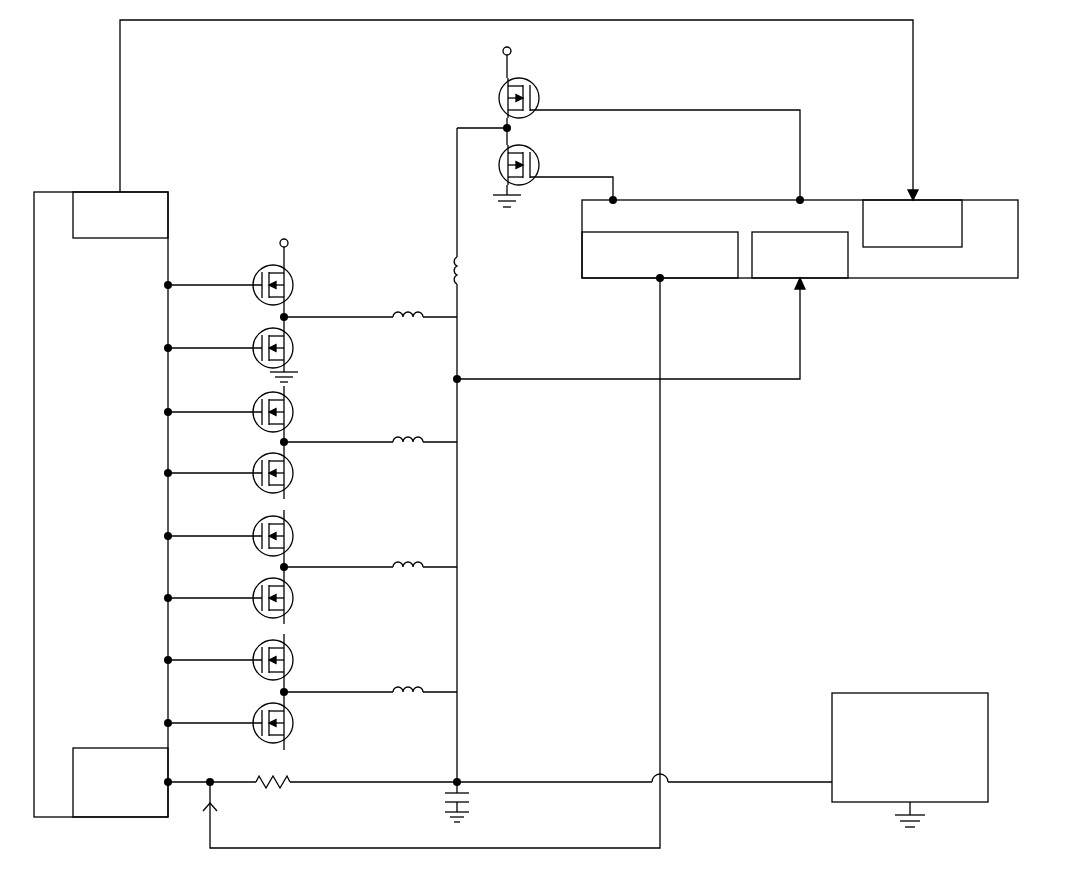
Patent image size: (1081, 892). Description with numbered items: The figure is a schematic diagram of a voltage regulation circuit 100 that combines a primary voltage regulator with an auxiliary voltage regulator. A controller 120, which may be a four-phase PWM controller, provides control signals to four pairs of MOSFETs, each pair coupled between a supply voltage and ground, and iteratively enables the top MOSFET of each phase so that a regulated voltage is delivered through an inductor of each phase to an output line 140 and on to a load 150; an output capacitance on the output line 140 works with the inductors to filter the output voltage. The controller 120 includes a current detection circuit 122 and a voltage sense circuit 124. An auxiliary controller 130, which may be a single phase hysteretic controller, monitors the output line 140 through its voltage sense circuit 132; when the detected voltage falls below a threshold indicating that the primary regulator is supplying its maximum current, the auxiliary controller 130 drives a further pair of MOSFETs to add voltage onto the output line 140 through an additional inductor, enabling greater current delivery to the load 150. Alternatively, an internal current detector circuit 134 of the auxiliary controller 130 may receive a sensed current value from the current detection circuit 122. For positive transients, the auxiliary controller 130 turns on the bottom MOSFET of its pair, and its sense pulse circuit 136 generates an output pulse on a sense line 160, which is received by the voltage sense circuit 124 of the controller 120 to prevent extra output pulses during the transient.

The circuit 100 is at (108, 40).
The controller 120 is at (86, 533).
The current detection circuit 122 is at (106, 232).
The voltage sense circuit 124 is at (106, 800).
The auxiliary controller 130 is at (1018, 240).
The voltage sense circuit 132 is at (786, 273).
The internal current detector circuit 134 is at (898, 241).
The sense pulse circuit 136 is at (646, 273).
The output line 140 is at (457, 630).
The load 150 is at (896, 771).
The sense line 160 is at (660, 565).